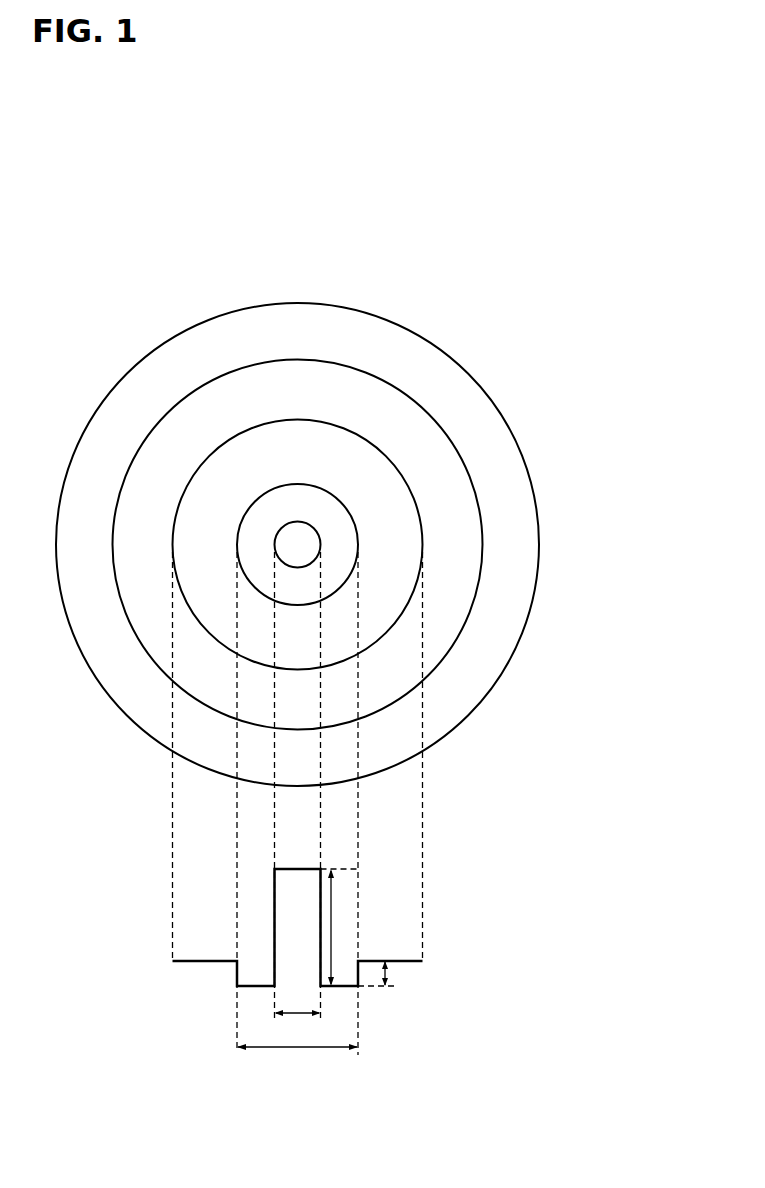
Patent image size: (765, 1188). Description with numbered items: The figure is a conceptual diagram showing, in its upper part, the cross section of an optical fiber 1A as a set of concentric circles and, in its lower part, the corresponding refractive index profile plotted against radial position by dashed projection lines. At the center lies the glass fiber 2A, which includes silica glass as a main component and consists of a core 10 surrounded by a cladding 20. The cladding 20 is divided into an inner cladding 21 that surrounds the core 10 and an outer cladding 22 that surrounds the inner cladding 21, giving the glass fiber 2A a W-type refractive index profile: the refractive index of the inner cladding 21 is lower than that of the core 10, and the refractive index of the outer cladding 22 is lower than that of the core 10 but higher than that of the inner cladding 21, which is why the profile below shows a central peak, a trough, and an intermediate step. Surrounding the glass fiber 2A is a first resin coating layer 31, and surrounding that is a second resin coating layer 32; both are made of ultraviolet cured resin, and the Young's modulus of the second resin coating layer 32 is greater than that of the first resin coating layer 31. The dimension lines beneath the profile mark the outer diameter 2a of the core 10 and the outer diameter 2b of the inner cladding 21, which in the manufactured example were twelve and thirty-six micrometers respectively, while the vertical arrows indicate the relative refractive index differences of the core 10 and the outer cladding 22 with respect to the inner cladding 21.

The optical fiber 1A is at (505, 336).
The core 10 is at (310, 537).
The cladding 20 is at (583, 508).
The inner cladding 21 is at (348, 532).
The outer cladding 22 is at (408, 550).
The glass fiber 2A is at (620, 470).
The first resin coating layer 31 is at (460, 610).
The second resin coating layer 32 is at (495, 658).
The outer diameter of the core 2a is at (298, 1002).
The outer diameter of the inner cladding 2b is at (297, 1036).